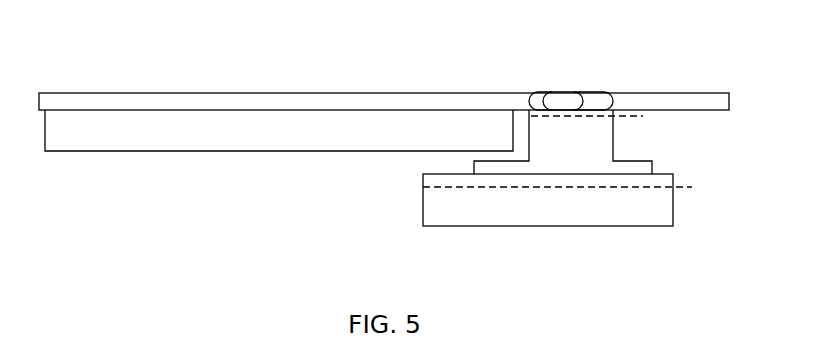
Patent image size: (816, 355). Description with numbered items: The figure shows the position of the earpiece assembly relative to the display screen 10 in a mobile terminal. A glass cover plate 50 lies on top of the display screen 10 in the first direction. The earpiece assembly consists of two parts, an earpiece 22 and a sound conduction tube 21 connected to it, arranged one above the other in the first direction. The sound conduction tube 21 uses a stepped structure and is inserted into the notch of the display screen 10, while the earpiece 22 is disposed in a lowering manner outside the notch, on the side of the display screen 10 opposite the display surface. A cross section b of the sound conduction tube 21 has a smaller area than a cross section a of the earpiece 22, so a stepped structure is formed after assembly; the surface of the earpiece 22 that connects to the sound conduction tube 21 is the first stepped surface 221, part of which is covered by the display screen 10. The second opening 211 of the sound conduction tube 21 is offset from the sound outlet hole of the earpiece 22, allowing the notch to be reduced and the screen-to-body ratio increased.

The glass cover plate 50 is at (233, 103).
The display screen 10 is at (417, 128).
The sound conduction tube 21 is at (582, 111).
The second opening 211 is at (545, 98).
The first stepped surface 221 is at (659, 173).
The earpiece 22 is at (633, 213).
The cross section a is at (565, 186).
The cross section b is at (596, 122).